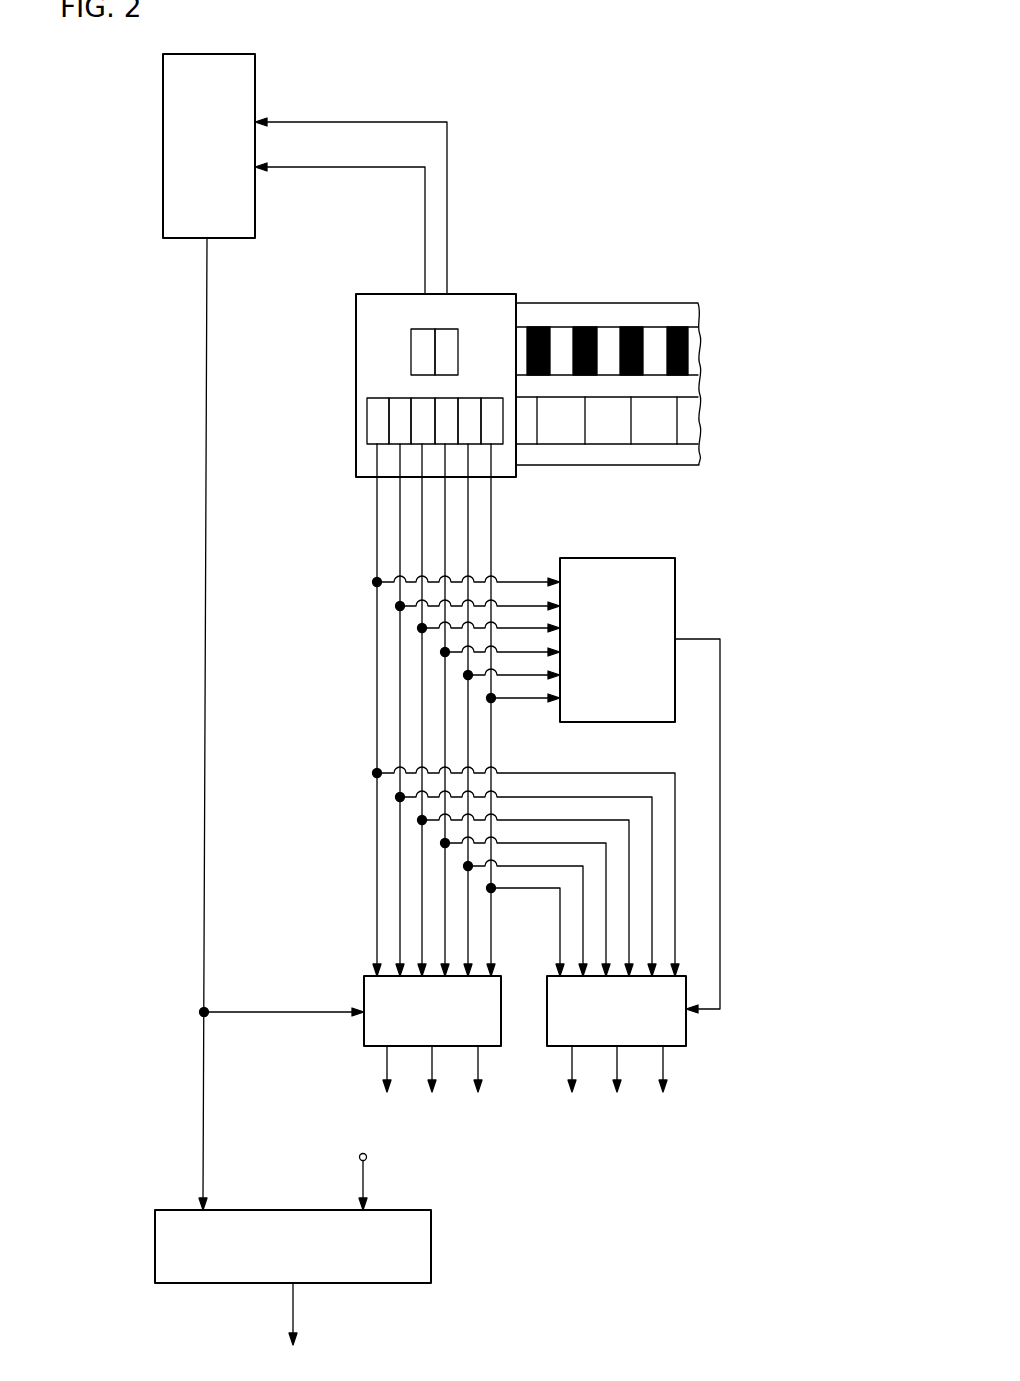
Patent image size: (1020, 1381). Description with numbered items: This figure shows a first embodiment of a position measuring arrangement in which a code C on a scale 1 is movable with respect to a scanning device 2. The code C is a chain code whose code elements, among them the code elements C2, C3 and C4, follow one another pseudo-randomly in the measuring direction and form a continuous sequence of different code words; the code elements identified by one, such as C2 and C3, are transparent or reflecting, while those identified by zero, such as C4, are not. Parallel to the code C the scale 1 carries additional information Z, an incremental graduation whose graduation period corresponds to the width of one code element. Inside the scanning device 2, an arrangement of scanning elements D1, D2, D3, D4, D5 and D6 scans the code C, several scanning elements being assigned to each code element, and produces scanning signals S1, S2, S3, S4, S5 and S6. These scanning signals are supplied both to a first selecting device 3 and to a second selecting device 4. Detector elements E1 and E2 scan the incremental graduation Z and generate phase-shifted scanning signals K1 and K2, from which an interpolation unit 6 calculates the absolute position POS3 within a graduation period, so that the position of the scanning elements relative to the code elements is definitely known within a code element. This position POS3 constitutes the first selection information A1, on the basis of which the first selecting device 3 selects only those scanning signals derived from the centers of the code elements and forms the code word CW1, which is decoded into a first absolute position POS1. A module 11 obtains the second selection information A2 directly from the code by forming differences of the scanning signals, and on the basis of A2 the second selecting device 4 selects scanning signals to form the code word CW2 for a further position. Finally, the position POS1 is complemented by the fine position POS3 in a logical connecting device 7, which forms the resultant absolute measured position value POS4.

The scale 1 is at (660, 313).
The scanning device 2 is at (492, 307).
The first selecting device 3 is at (384, 996).
The second selecting device 4 is at (673, 1027).
The interpolation unit 6 is at (175, 163).
The logical connecting device 7 is at (408, 1250).
The module 11 is at (648, 602).
The scanning signal K1 is at (318, 120).
The scanning signal K2 is at (355, 170).
The first absolute position POS1 is at (361, 1175).
The absolute position within a code element POS3 is at (207, 343).
The resultant absolute measured position value POS4 is at (295, 1310).
The detector element E1 is at (424, 340).
The detector element E2 is at (451, 340).
The scanning element D1 is at (378, 430).
The scanning element D2 is at (398, 425).
The scanning element D3 is at (422, 412).
The scanning element D4 is at (446, 410).
The scanning element D5 is at (469, 432).
The scanning element D6 is at (493, 423).
The scanning signal S1 is at (377, 906).
The scanning signal S2 is at (397, 862).
The scanning signal S3 is at (423, 730).
The scanning signal S4 is at (447, 692).
The scanning signal S5 is at (467, 537).
The scanning signal S6 is at (492, 517).
The additional information Z is at (728, 345).
The code C is at (653, 421).
The code element C2 is at (554, 425).
The code element C3 is at (602, 425).
The code element C4 is at (648, 425).
The first selection information A1 is at (261, 1016).
The second selection information A2 is at (722, 970).
The code word CW1 is at (496, 1058).
The code word CW2 is at (681, 1058).